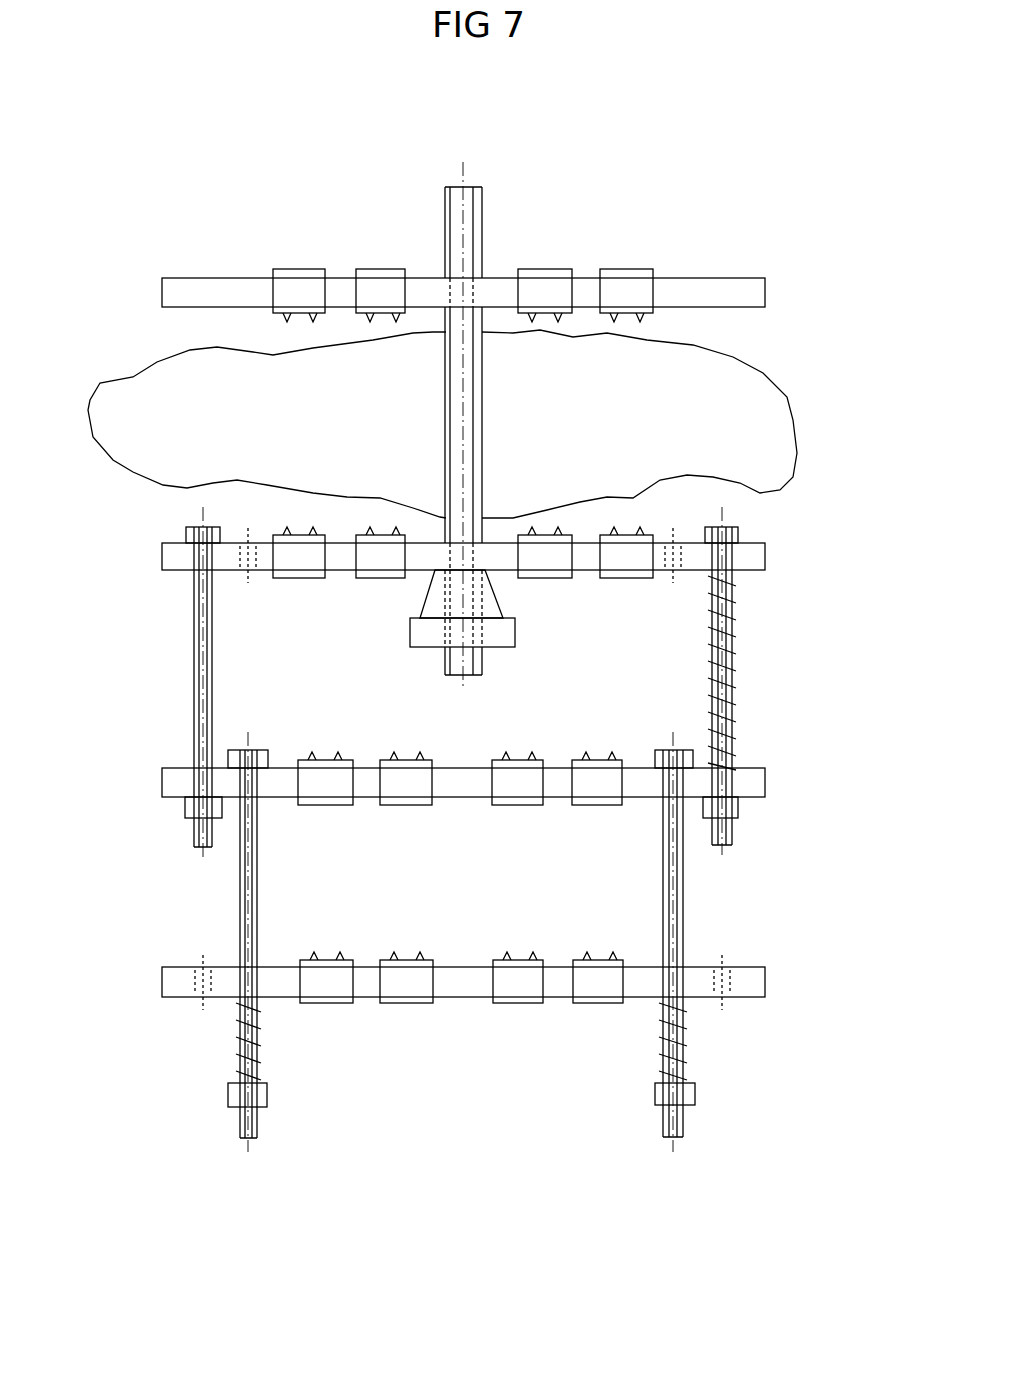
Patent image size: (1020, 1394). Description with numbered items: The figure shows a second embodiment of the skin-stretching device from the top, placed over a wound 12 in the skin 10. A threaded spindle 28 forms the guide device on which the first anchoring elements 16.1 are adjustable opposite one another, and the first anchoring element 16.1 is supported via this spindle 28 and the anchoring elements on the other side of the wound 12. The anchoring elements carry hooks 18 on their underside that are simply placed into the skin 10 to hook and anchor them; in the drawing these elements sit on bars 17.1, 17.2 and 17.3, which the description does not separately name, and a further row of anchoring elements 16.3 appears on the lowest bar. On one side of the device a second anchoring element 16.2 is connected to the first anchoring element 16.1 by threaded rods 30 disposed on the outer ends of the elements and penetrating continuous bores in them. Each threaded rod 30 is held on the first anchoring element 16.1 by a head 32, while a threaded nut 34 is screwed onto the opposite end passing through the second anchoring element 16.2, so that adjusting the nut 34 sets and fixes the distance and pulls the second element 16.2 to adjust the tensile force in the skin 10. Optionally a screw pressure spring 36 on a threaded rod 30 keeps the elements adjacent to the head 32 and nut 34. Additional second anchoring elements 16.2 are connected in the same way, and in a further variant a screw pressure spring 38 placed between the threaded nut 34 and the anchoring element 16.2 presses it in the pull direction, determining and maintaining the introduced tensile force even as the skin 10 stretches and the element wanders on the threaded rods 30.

The skin 10 is at (740, 483).
The wound 12 is at (681, 429).
The first anchoring element 16.1 is at (540, 283).
The second anchoring element 16.2 is at (605, 792).
The third anchor elements 16.3 is at (603, 990).
The first support bar 17.1 is at (727, 277).
The second support bar 17.2 is at (765, 782).
The third support bar 17.3 is at (765, 980).
The hooks 18 is at (560, 313).
The threaded spindle 28 is at (455, 213).
The threaded rods 30 is at (193, 647).
The head 32 is at (186, 535).
The threaded nut 34 is at (187, 808).
The screw pressure spring 36 is at (737, 627).
The screw pressure spring 38 is at (233, 1047).